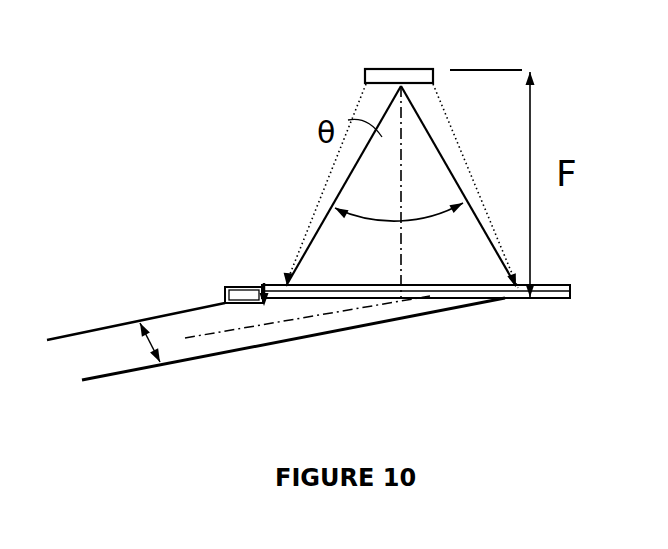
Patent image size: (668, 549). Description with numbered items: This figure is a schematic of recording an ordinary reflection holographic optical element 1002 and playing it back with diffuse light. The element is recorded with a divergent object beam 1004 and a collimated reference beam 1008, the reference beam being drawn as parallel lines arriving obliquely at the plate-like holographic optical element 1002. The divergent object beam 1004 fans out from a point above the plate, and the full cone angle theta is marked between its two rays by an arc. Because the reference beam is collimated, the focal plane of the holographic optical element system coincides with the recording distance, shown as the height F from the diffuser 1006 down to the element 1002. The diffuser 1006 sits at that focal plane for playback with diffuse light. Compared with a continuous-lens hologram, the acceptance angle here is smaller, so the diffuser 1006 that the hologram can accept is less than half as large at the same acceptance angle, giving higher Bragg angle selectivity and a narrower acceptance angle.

The ordinary reflection holographic optical element 1002 is at (552, 285).
The divergent object beam 1004 is at (370, 228).
The diffuser 1006 is at (373, 70).
The collimated reference beam 1008 is at (141, 324).